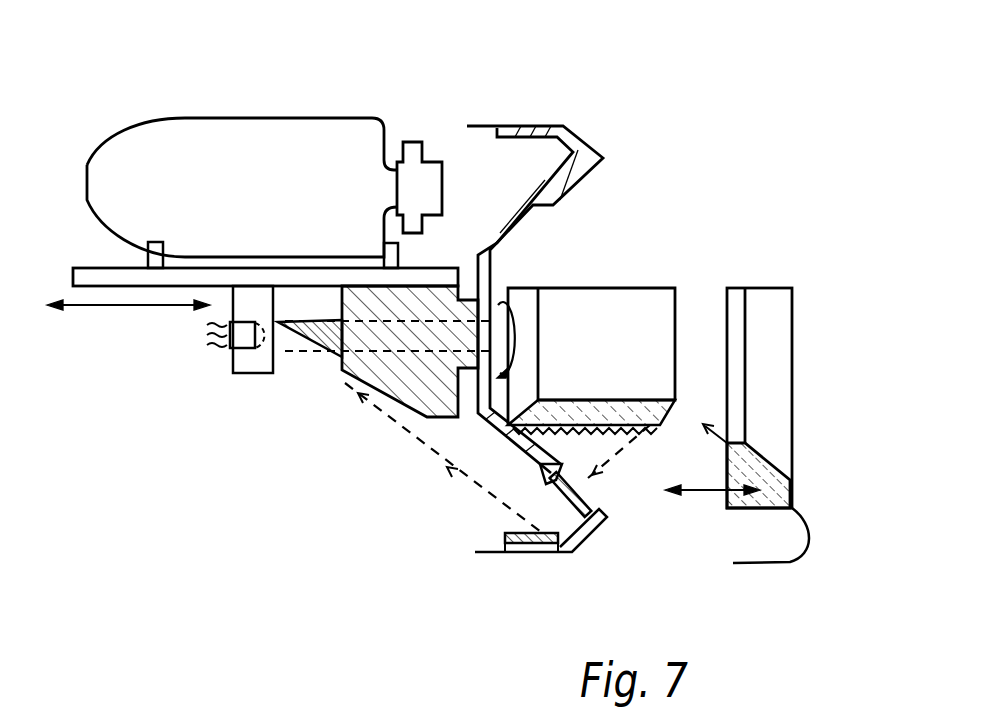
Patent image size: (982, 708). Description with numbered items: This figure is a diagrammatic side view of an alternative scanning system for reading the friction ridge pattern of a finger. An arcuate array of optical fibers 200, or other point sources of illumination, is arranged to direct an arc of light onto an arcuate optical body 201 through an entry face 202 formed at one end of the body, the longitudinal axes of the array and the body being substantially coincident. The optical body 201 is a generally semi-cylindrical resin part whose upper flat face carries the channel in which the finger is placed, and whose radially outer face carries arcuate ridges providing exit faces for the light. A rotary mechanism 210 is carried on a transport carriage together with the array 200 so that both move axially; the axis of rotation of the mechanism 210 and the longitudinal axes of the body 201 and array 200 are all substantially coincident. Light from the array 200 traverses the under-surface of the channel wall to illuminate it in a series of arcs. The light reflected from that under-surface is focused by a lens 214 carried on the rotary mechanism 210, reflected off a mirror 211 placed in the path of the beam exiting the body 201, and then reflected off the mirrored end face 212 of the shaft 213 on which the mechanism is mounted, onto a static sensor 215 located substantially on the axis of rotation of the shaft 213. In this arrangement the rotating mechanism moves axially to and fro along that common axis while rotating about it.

The rotary mechanism 210 is at (553, 68).
The static sensor 215 is at (232, 348).
The mirrored end face 212 is at (327, 367).
The shaft 213 is at (380, 350).
The lens 214 is at (583, 513).
The mirror 211 is at (540, 550).
The arcuate optical body 201 is at (593, 417).
The entry face 202 is at (660, 423).
The arcuate array of optical fibers 200 is at (780, 470).